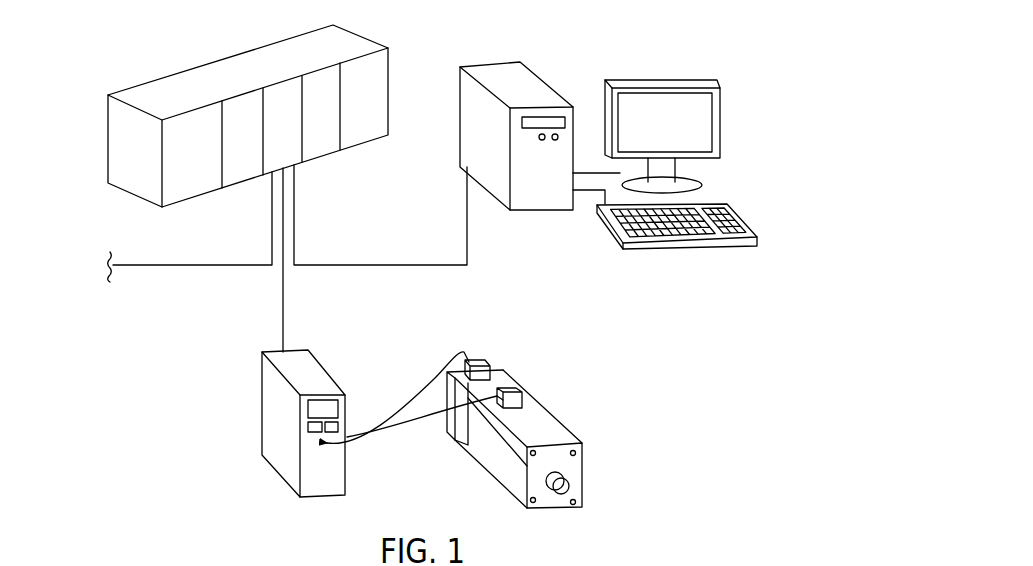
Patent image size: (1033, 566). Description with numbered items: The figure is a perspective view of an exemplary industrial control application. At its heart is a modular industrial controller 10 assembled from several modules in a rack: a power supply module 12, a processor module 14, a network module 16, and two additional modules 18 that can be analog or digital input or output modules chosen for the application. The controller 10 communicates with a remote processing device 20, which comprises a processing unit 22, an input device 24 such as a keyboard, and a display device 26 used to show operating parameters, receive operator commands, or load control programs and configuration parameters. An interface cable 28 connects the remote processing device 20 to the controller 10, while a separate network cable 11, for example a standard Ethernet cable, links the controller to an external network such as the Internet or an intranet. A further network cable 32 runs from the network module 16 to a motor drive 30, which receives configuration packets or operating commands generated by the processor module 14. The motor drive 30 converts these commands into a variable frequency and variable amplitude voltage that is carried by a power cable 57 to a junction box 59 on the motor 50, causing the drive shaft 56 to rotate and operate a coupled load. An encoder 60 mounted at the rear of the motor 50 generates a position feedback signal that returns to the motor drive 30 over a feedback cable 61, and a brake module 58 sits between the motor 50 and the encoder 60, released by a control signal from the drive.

The industrial controller 10 is at (128, 152).
The network cable 11 is at (183, 268).
The power supply module 12 is at (188, 128).
The processor module 14 is at (245, 105).
The network module 16 is at (287, 93).
The additional modules 18 is at (362, 122).
The remote processing device 20 is at (634, 139).
The processing unit 22 is at (522, 80).
The input device 24 is at (745, 213).
The display device 26 is at (720, 139).
The interface cable 28 is at (370, 262).
The motor drive 30 is at (295, 355).
The network cable 32 is at (285, 290).
The motor 50 is at (552, 408).
The drive shaft 56 is at (562, 482).
The power cable 57 is at (402, 427).
The brake module 58 is at (513, 382).
The junction box 59 is at (518, 393).
The encoder 60 is at (492, 370).
The feedback cable 61 is at (407, 390).